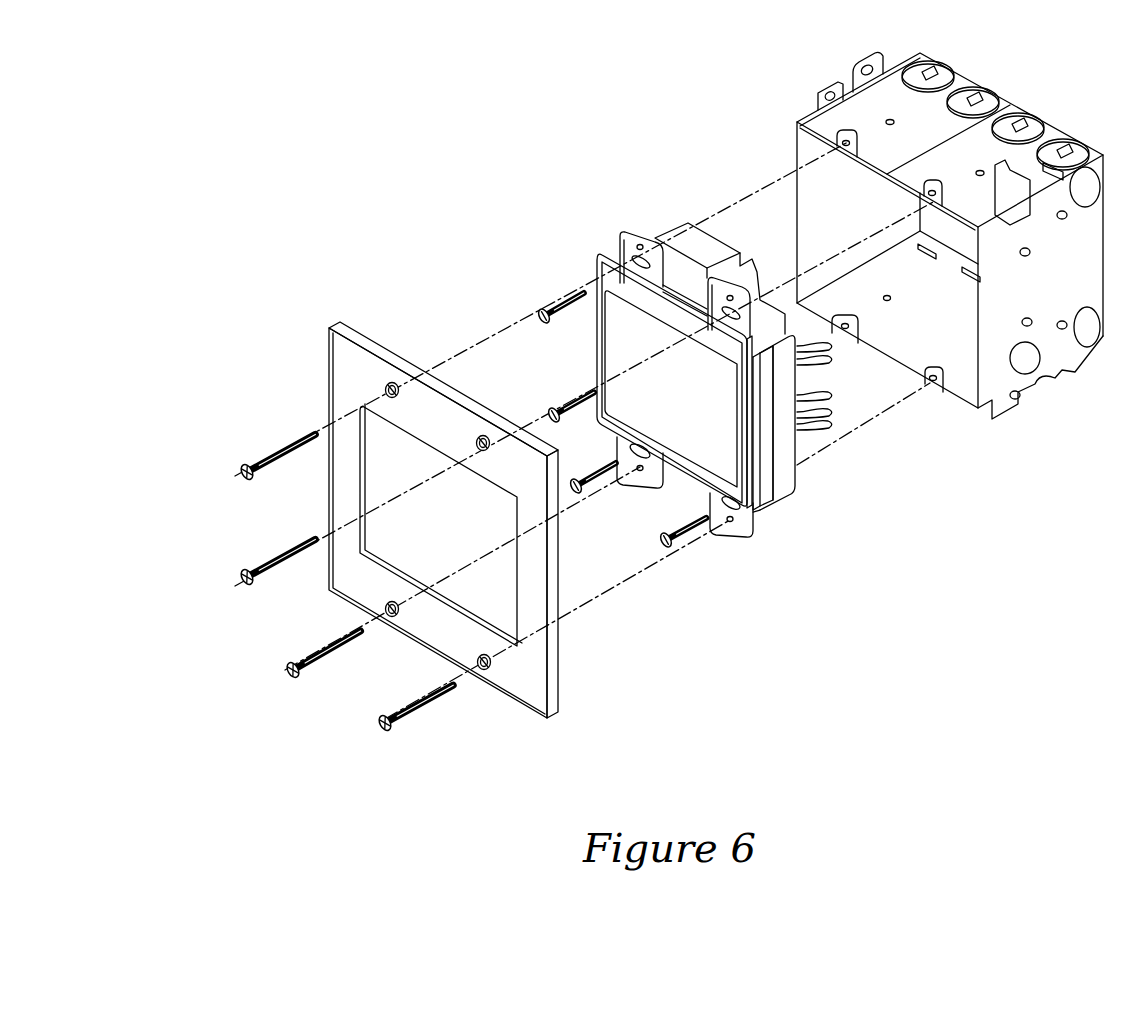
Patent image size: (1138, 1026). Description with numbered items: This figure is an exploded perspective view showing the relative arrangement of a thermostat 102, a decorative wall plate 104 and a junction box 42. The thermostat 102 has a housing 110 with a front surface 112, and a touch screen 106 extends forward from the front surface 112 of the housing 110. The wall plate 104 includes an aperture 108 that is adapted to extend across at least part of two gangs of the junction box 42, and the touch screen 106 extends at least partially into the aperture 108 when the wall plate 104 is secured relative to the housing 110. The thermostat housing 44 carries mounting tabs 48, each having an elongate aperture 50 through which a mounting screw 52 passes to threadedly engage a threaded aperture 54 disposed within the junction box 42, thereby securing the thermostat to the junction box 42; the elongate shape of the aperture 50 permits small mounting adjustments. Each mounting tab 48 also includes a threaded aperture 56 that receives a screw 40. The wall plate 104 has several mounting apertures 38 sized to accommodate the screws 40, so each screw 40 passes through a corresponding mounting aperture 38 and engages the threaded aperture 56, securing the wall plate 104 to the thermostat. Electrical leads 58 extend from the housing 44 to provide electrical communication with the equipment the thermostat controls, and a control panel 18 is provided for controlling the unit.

The control panel 18 is at (730, 378).
The mounting apertures 38 is at (482, 440).
The screws 40 is at (240, 472).
The junction box 42 is at (923, 235).
The housing 44 is at (779, 380).
The mounting tabs 48 is at (604, 231).
The aperture 50 is at (630, 255).
The mounting screw 52 is at (562, 302).
The threaded aperture 54 is at (866, 102).
The threaded aperture 56 is at (640, 243).
The electrical leads 58 is at (838, 346).
The thermostat 102 is at (717, 248).
The wall plate 104 is at (486, 520).
The touch screen 106 is at (678, 435).
The aperture 108 is at (503, 602).
The housing 110 is at (778, 437).
The front surface 112 is at (764, 473).